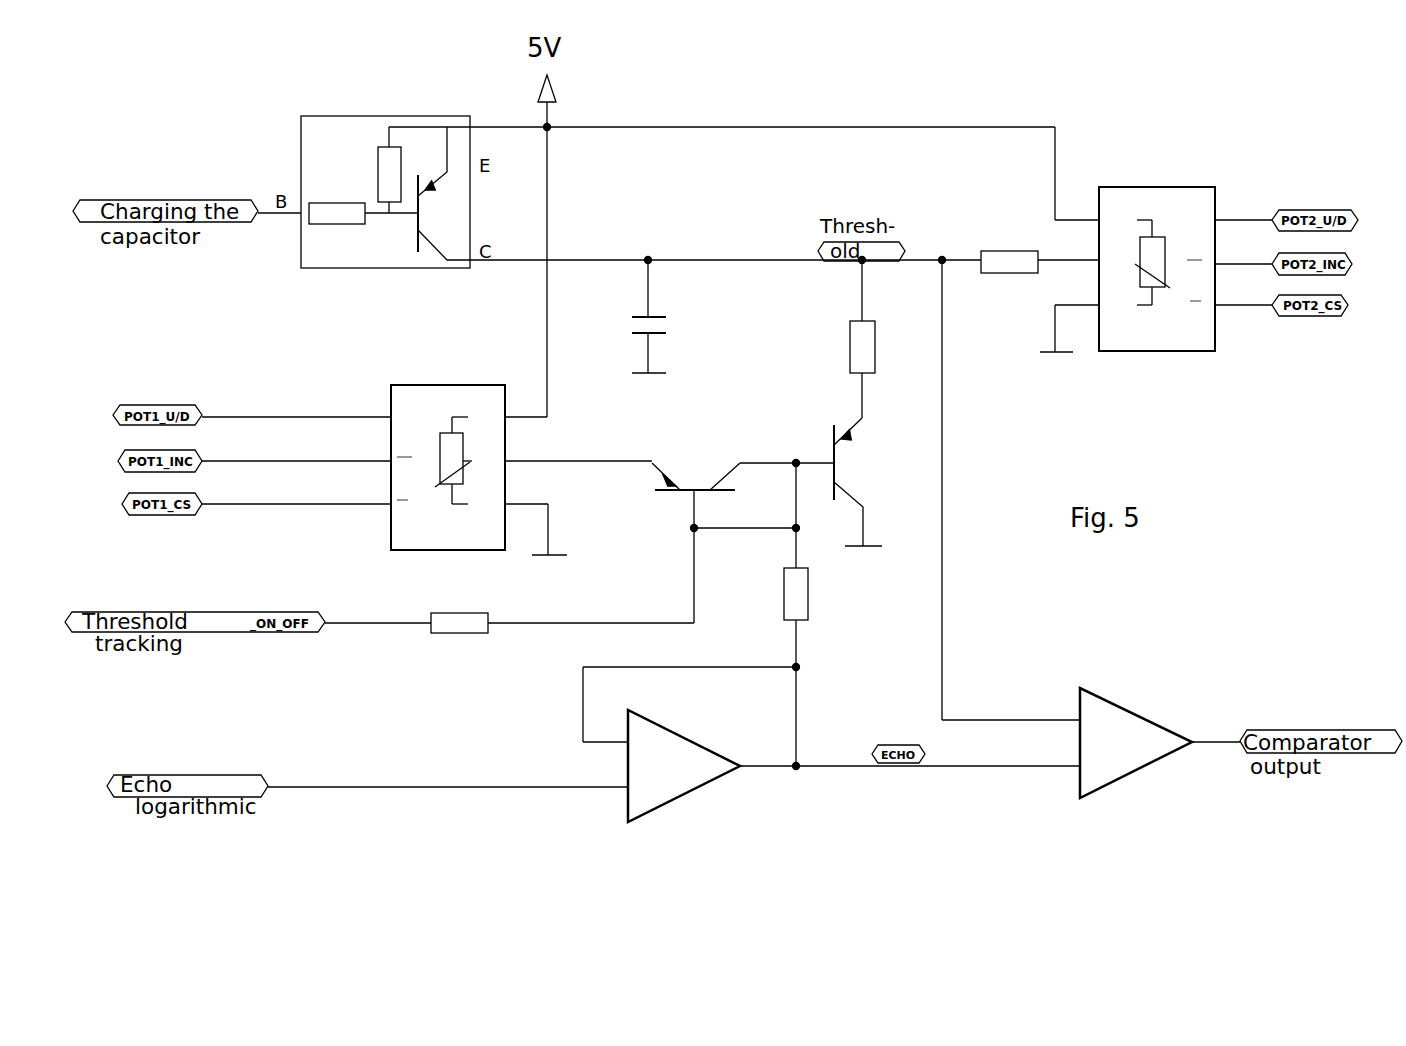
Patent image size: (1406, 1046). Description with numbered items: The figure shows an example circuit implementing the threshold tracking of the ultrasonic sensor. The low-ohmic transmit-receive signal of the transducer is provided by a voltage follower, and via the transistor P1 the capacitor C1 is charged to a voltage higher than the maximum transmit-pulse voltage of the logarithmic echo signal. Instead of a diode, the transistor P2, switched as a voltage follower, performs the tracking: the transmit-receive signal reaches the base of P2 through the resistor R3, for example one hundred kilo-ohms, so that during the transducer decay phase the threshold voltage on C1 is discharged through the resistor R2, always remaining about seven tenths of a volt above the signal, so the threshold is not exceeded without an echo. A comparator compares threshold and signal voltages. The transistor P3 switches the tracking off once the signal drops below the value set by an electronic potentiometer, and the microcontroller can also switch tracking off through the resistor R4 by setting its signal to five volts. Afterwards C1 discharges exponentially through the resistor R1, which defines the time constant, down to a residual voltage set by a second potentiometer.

The transistor P1 is at (385, 169).
The transistor P2 is at (858, 482).
The transistor P3 is at (696, 470).
The resistor R1 is at (1009, 248).
The resistor R2 is at (876, 339).
The resistor R3 is at (811, 594).
The resistor R4 is at (459, 610).
The capacitor C1 is at (634, 316).